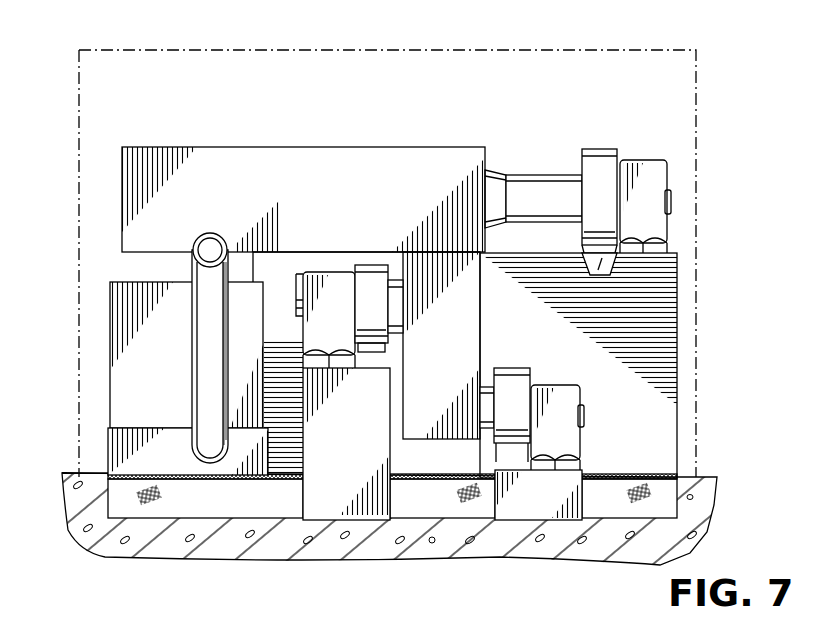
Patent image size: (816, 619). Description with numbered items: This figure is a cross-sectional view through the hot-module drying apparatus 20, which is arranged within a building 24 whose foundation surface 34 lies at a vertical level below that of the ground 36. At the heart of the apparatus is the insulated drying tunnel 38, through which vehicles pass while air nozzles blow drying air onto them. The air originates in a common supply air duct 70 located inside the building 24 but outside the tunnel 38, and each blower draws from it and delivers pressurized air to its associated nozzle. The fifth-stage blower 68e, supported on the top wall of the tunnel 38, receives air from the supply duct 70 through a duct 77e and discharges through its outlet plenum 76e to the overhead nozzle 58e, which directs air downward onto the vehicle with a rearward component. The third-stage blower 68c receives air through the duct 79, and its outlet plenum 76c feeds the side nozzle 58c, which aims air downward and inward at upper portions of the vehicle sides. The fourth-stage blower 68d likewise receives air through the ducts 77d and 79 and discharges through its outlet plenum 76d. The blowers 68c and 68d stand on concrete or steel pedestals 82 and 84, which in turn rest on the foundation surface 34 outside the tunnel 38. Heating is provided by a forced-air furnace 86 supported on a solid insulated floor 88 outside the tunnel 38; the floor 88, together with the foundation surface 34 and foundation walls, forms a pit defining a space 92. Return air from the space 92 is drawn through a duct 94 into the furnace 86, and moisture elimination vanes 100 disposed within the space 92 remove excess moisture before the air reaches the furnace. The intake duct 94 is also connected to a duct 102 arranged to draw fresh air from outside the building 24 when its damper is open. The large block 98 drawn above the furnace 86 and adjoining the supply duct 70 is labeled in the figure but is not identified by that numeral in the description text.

The drying apparatus 20 is at (103, 154).
The building 24 is at (178, 50).
The foundation surface 34 is at (240, 518).
The ground 36 is at (62, 473).
The drying tunnel 38 is at (684, 282).
The nozzle 58c is at (392, 345).
The nozzle 58e is at (598, 262).
The blower 68c is at (298, 289).
The blower 68d is at (547, 377).
The blower 68e is at (641, 155).
The supply air duct 70 is at (441, 146).
The outlet plenum 76c is at (379, 318).
The outlet plenum 76d is at (520, 407).
The outlet plenum 76e is at (610, 200).
The duct 77d is at (486, 437).
The duct 77e is at (385, 226).
The duct 79 is at (456, 323).
The pedestal 82 is at (352, 453).
The pedestal 84 is at (544, 510).
The forced-air furnace 86 is at (171, 371).
The insulated floor 88 is at (140, 474).
The space 92 is at (276, 505).
The duct 94 is at (188, 467).
The housing 98 is at (155, 147).
The moisture elimination vanes 100 is at (158, 494).
The duct 102 is at (205, 342).